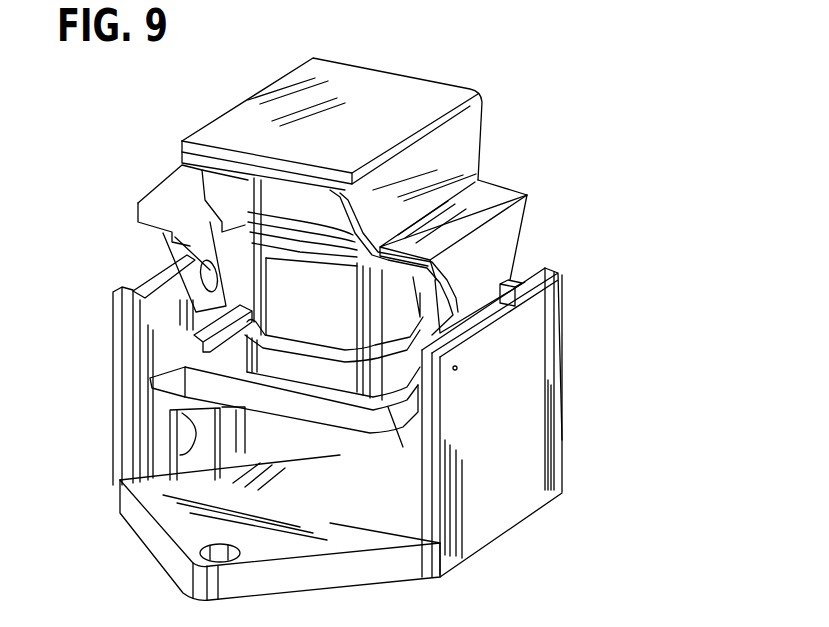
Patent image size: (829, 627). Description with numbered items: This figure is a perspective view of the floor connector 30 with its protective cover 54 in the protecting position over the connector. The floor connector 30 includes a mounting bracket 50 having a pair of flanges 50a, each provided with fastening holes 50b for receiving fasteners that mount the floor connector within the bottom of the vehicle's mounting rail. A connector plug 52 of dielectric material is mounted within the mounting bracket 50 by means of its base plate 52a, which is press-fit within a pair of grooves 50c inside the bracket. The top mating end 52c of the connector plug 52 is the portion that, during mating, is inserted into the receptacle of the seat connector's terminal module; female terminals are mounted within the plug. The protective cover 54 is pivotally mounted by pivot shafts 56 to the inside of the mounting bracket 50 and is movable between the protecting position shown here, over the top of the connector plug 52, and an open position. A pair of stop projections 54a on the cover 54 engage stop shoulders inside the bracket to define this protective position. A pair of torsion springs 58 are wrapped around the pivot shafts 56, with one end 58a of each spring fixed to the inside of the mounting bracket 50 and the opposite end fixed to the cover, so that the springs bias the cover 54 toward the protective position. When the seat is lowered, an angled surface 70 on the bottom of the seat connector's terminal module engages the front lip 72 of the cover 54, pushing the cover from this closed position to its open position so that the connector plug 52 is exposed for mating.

The floor connector 30 is at (537, 233).
The mounting bracket 50 is at (527, 410).
The flanges 50a is at (180, 532).
The fastening holes 50b is at (202, 545).
The grooves 50c is at (172, 420).
The connector plug 52 is at (273, 288).
The base plate 52a is at (388, 407).
The top mating end 52c is at (295, 177).
The protective cover 54 is at (372, 83).
The stop projections 54a is at (150, 390).
The pivot shafts 56 is at (200, 262).
The springs 58 is at (522, 285).
The end of spring 58a is at (142, 283).
The angled surface 70 is at (573, 619).
The front lip 72 is at (282, 197).